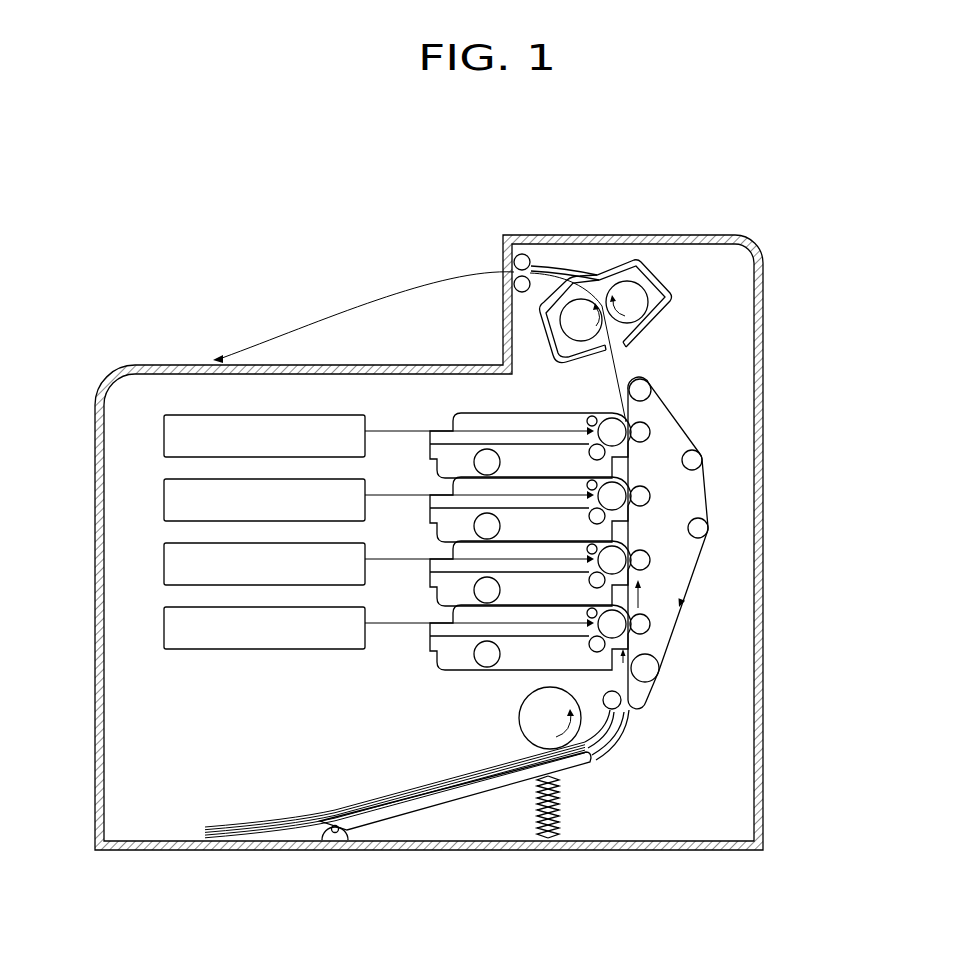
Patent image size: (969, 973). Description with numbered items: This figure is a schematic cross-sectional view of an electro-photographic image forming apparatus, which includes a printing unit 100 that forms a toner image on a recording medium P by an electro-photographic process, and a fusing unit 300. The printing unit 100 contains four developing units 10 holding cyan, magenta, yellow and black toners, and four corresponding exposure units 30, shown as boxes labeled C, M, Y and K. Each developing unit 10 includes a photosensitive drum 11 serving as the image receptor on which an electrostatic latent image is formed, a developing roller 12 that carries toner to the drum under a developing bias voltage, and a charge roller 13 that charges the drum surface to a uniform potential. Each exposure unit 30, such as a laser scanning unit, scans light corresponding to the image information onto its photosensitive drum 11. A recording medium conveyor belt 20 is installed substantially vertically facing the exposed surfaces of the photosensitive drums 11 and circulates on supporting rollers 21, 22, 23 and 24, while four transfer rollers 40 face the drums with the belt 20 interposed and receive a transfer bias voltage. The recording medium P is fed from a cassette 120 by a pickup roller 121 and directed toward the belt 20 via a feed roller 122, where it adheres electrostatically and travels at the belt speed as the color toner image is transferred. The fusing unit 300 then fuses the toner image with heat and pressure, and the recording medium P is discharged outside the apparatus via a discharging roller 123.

The printing unit 100 is at (661, 370).
The developing unit 10 is at (550, 406).
The photosensitive drum 11 is at (609, 426).
The developing roller 12 is at (594, 448).
The charge roller 13 is at (590, 419).
The recording medium conveyor belt 20 is at (652, 430).
The supporting roller 21 is at (652, 668).
The supporting roller 22 is at (702, 528).
The supporting roller 23 is at (698, 460).
The supporting roller 24 is at (645, 392).
The exposure unit 30 is at (222, 412).
The transfer roller 40 is at (663, 437).
The cassette 120 is at (280, 810).
The pickup roller 121 is at (548, 718).
The feed roller 122 is at (605, 697).
The discharging roller 123 is at (523, 257).
The fusing unit 300 is at (684, 302).
The recording medium P is at (412, 786).